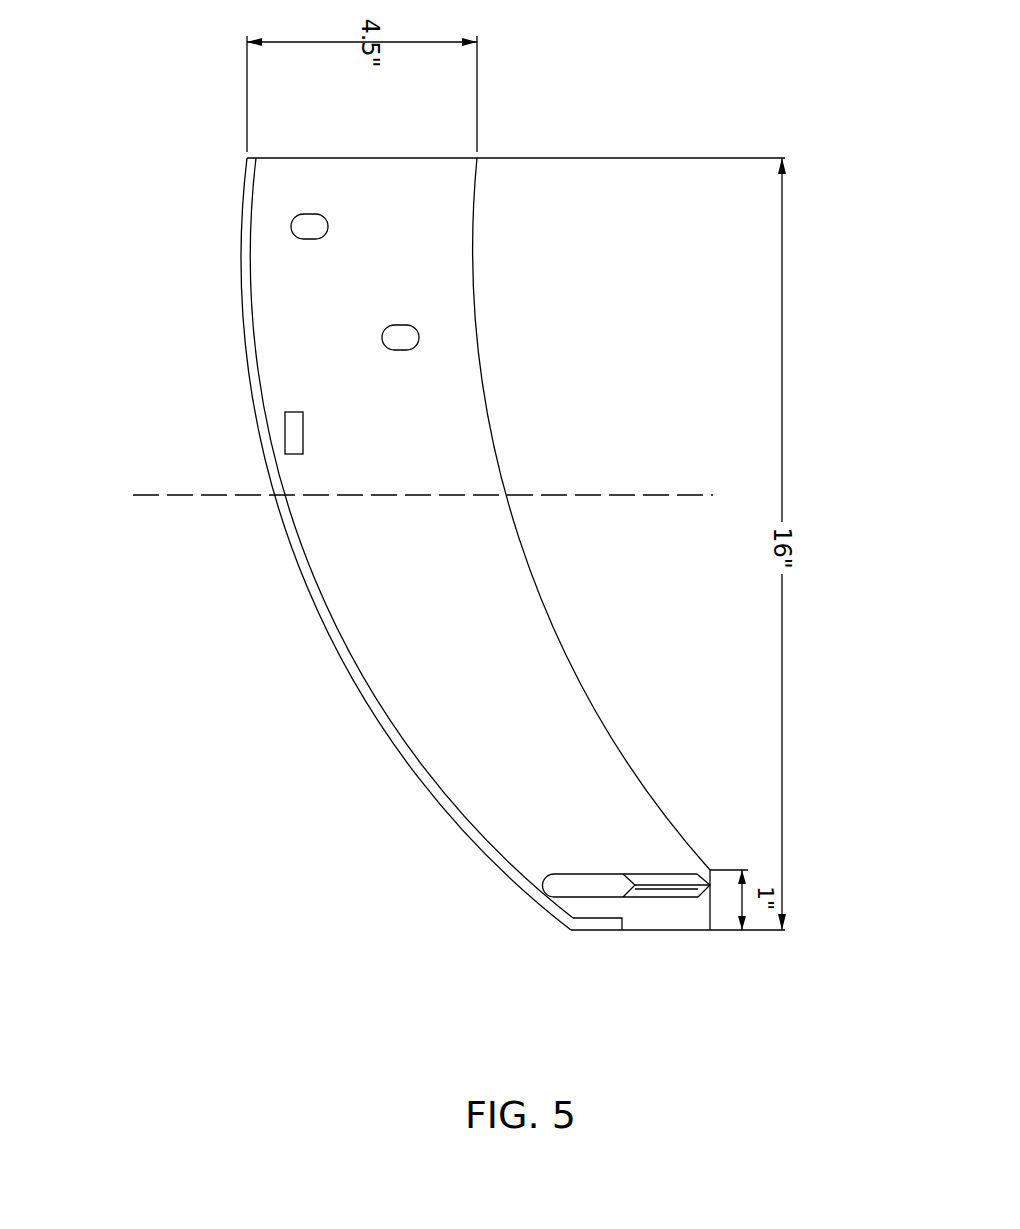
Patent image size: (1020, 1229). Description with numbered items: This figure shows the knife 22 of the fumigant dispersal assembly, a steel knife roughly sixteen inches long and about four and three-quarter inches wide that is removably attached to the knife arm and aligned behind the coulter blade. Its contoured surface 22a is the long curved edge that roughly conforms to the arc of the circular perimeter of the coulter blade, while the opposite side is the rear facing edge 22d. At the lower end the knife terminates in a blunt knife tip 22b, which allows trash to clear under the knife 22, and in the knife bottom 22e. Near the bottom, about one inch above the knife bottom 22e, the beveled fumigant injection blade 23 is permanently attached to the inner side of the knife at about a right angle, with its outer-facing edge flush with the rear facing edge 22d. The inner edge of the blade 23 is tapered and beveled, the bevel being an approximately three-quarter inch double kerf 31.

The knife 22 is at (493, 584).
The contoured surface 22a is at (480, 333).
The blunt knife tip 22b is at (710, 876).
The rear facing edge 22d is at (326, 587).
The knife bottom 22e is at (637, 932).
The blade 23 is at (560, 885).
The double kerf 31 is at (667, 878).